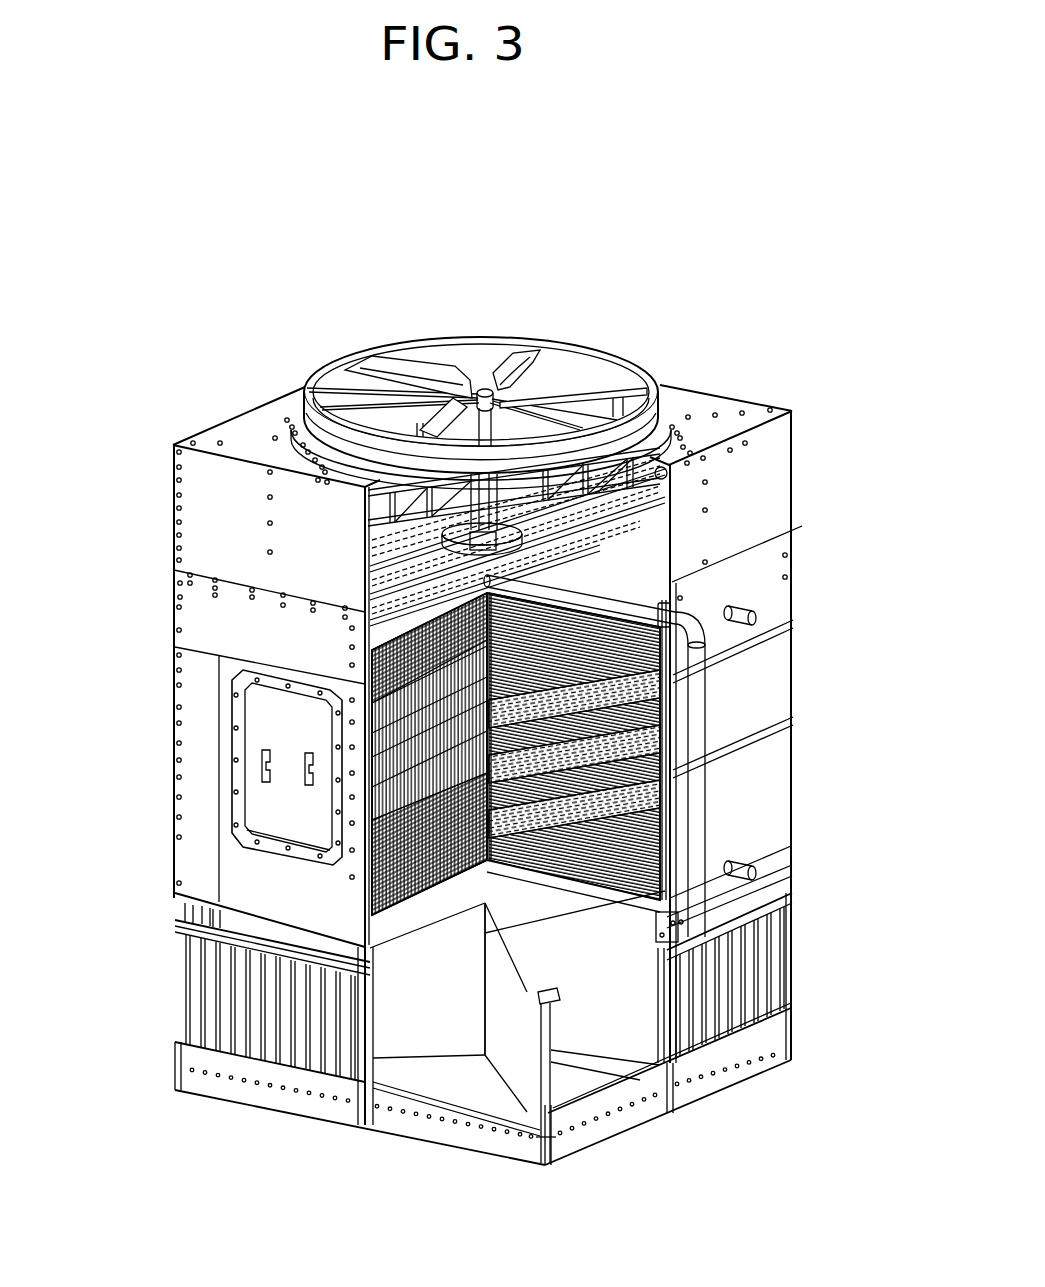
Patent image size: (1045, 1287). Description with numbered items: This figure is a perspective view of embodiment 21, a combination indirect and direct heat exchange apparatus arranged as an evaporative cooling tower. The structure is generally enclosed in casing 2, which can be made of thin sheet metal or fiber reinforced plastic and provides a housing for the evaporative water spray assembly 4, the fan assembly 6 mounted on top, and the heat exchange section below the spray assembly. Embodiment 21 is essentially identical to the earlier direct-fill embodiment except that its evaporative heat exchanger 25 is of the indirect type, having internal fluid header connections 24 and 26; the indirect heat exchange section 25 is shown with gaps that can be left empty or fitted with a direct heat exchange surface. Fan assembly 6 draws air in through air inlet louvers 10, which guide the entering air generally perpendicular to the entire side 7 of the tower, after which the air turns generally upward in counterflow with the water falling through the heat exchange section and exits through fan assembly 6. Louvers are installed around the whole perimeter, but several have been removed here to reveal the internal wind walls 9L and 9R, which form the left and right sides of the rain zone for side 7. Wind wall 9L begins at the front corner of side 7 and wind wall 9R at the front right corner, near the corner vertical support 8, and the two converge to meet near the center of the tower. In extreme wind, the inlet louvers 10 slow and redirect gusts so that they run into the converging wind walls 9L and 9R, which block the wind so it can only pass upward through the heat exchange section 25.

The embodiment 21 is at (158, 393).
The casing 2 is at (172, 612).
The fan assembly 6 is at (432, 367).
The evaporative water spray assembly 4 is at (650, 580).
The internal fluid header connection 24 is at (757, 620).
The evaporative heat exchanger 25 is at (660, 722).
The internal fluid header connection 26 is at (762, 872).
The air inlet louvers 10 is at (232, 992).
The side 7 is at (223, 1098).
The corner vertical support 8 is at (553, 1050).
The left wind wall 9L is at (417, 980).
The right wind wall 9R is at (513, 1035).